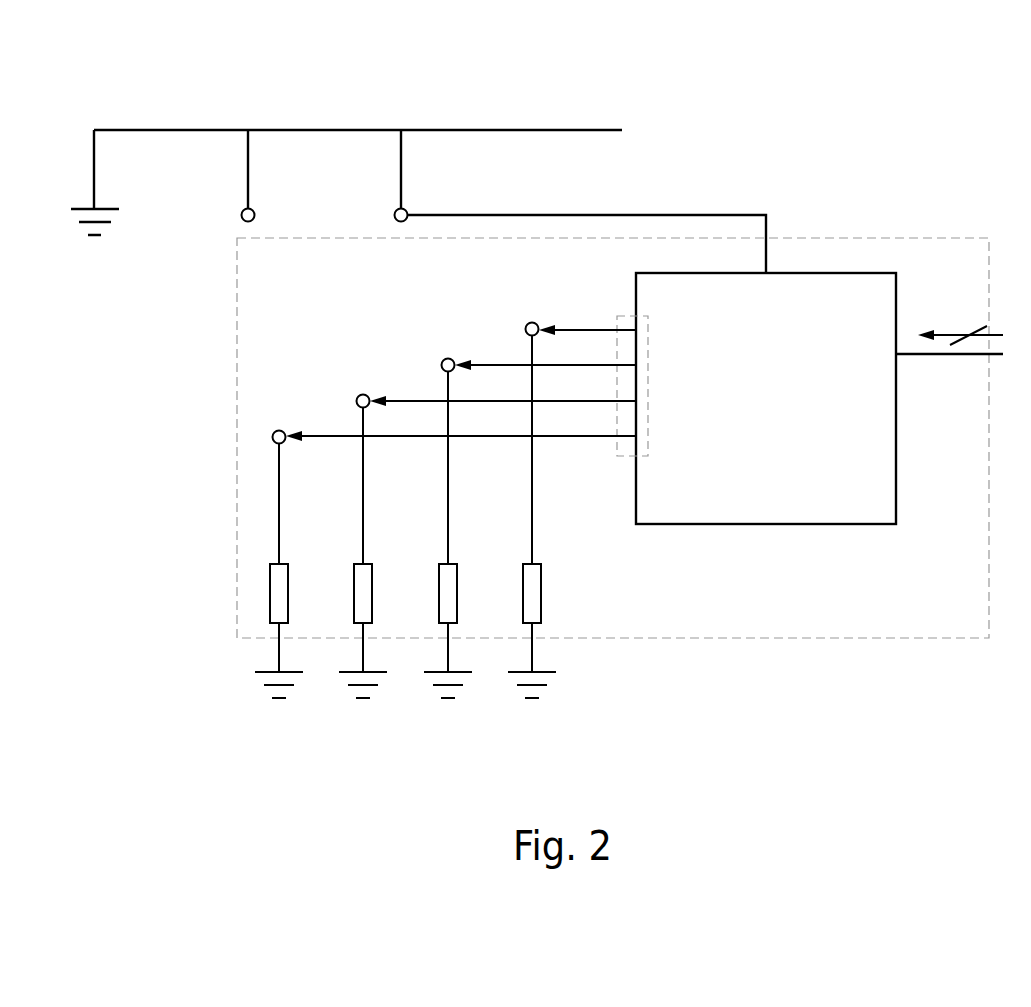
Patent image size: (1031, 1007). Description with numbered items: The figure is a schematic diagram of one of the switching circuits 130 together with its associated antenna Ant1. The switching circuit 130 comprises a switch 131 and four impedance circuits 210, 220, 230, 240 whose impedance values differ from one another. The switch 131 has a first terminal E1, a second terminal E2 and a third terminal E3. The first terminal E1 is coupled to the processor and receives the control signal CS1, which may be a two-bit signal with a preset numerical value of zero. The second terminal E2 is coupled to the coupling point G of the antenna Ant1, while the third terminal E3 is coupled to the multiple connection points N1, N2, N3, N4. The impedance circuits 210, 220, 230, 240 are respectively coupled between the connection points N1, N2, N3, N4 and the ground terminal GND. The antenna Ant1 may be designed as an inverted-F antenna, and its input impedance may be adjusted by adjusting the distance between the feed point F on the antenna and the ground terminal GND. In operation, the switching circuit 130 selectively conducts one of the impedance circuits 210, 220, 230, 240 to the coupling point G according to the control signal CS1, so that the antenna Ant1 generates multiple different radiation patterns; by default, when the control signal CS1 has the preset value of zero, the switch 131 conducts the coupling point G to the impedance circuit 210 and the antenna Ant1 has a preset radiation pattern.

The antenna Ant1 is at (577, 128).
The feed point F is at (240, 215).
The coupling point G is at (393, 215).
The switching circuit 130 is at (233, 438).
The switch 131 is at (852, 272).
The first terminal E1 is at (929, 355).
The second terminal E2 is at (650, 344).
The third terminal E3 is at (596, 261).
The control signal CS1 is at (960, 322).
The connection point N1 is at (444, 419).
The connection point N2 is at (484, 383).
The connection point N3 is at (527, 348).
The connection point N4 is at (563, 312).
The impedance circuit 210 is at (290, 582).
The impedance circuit 220 is at (374, 582).
The impedance circuit 230 is at (459, 582).
The impedance circuit 240 is at (543, 582).
The ground terminal GND is at (405, 704).